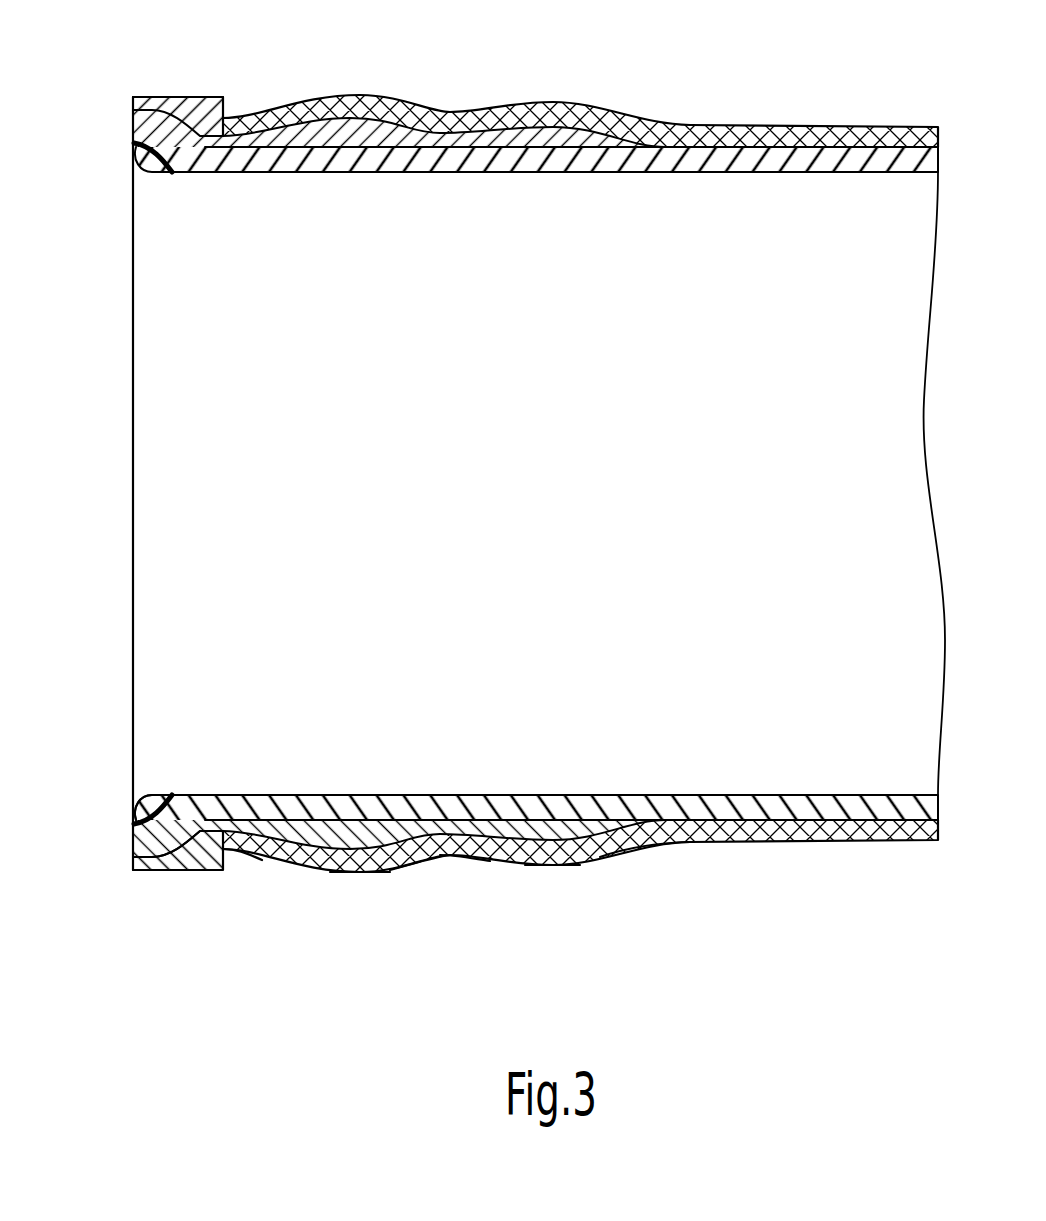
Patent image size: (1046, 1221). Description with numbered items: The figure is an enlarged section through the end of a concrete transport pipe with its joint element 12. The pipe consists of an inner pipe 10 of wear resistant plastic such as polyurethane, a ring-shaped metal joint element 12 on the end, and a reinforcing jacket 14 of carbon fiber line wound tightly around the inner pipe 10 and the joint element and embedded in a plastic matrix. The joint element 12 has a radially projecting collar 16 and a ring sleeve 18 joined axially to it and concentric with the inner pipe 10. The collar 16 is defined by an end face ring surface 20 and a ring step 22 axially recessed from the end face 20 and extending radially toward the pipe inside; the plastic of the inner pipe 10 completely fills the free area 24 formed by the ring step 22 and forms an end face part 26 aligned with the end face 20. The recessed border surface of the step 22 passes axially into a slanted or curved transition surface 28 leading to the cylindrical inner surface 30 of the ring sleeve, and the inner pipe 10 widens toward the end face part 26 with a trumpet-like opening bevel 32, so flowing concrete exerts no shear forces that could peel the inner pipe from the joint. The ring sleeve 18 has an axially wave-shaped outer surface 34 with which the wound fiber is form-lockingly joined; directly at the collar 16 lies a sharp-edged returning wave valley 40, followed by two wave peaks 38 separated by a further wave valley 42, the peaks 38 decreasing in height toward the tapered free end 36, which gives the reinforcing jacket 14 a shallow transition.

The inner pipe 10 is at (830, 837).
The joint element 12 is at (212, 862).
The reinforcing jacket 14 is at (753, 838).
The collar 16 is at (180, 873).
The ring sleeve 18 is at (370, 833).
The end face ring surface 20 is at (133, 110).
The ring step 22 is at (140, 830).
The free area 24 is at (140, 812).
The end face part 26 is at (132, 142).
The transition surface 28 is at (150, 805).
The cylindrical inner surface 30 is at (318, 817).
The opening bevel 32 is at (145, 170).
The wave-shaped outer surface 34 is at (413, 850).
The free end 36 is at (633, 835).
The wave peaks 38 is at (380, 838).
The wave valley 40 is at (255, 852).
The further wave valley 42 is at (473, 853).